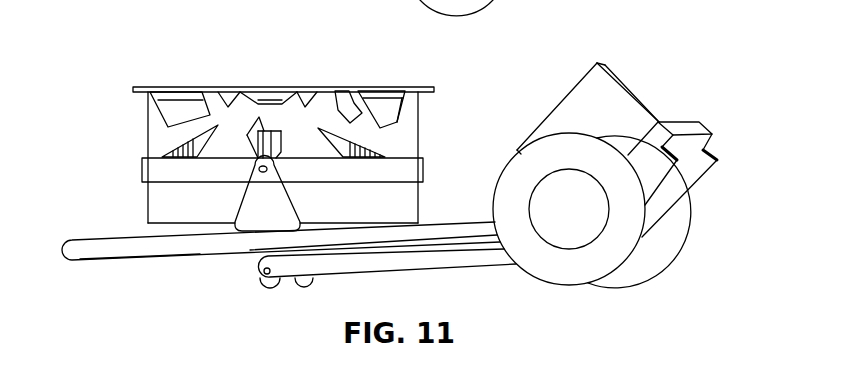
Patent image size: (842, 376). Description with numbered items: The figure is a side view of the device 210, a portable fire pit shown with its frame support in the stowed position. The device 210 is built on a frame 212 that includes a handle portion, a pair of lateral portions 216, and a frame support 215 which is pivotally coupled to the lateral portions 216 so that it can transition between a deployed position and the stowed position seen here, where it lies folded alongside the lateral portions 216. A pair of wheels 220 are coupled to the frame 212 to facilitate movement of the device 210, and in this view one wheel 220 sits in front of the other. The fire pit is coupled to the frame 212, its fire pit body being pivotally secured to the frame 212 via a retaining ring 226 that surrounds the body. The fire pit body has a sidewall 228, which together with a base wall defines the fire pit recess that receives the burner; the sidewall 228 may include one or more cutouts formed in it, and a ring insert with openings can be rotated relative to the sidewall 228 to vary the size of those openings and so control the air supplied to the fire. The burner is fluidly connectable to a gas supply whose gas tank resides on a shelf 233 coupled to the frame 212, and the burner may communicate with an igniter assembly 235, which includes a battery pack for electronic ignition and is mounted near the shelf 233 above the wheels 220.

The device 210 is at (117, 54).
The frame 212 is at (86, 271).
The frame support 215 is at (373, 263).
The lateral portions 216 is at (152, 248).
The wheels 220 is at (503, 2).
The retaining ring 226 is at (426, 168).
The sidewall 228 is at (155, 132).
The shelf 233 is at (685, 127).
The igniter assembly 235 is at (613, 98).